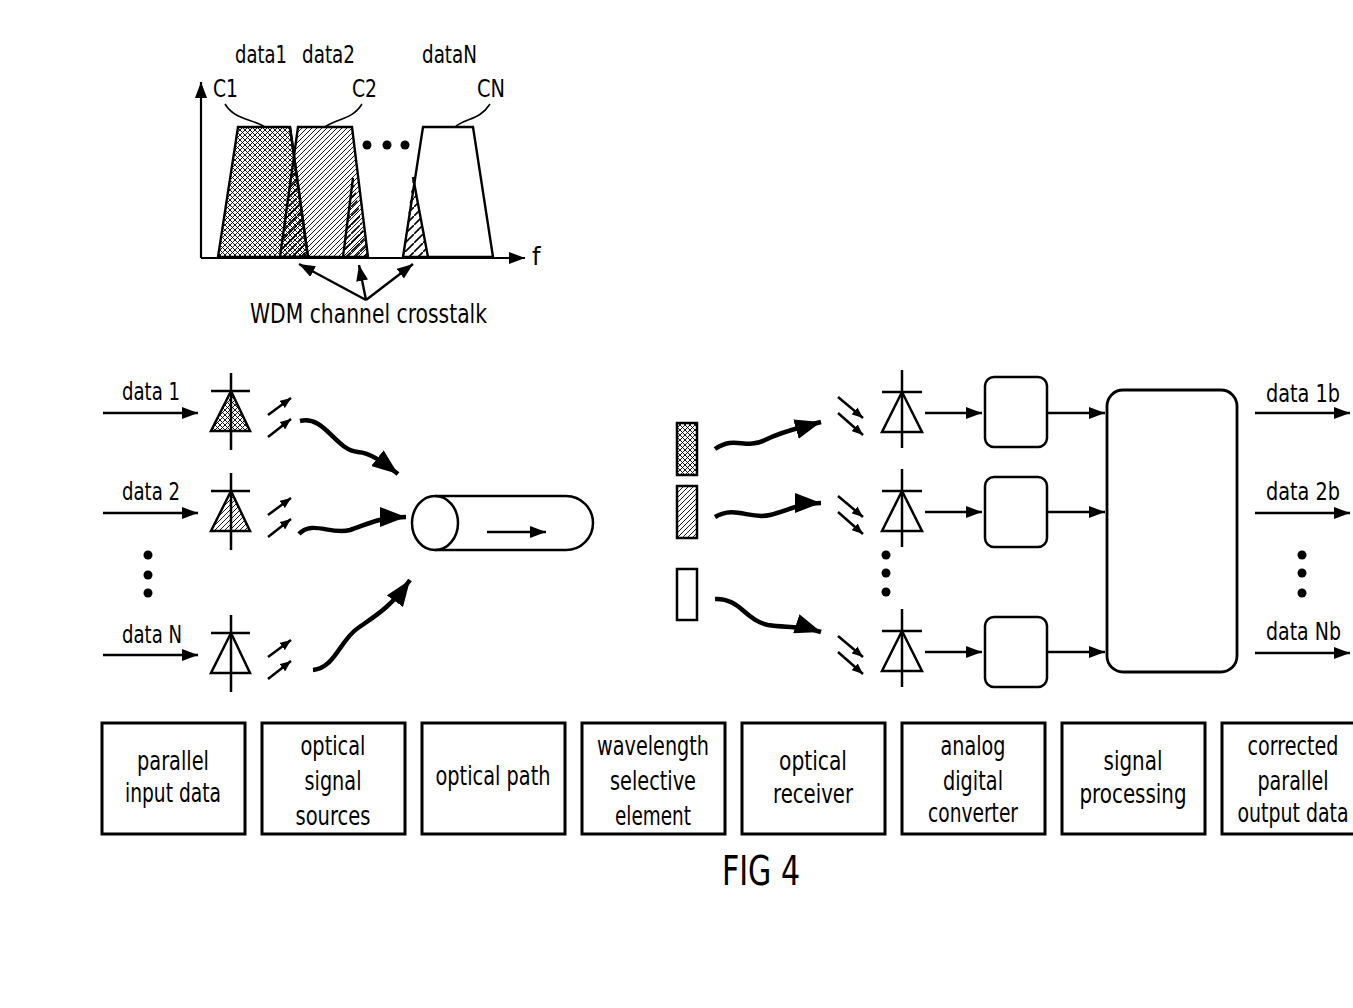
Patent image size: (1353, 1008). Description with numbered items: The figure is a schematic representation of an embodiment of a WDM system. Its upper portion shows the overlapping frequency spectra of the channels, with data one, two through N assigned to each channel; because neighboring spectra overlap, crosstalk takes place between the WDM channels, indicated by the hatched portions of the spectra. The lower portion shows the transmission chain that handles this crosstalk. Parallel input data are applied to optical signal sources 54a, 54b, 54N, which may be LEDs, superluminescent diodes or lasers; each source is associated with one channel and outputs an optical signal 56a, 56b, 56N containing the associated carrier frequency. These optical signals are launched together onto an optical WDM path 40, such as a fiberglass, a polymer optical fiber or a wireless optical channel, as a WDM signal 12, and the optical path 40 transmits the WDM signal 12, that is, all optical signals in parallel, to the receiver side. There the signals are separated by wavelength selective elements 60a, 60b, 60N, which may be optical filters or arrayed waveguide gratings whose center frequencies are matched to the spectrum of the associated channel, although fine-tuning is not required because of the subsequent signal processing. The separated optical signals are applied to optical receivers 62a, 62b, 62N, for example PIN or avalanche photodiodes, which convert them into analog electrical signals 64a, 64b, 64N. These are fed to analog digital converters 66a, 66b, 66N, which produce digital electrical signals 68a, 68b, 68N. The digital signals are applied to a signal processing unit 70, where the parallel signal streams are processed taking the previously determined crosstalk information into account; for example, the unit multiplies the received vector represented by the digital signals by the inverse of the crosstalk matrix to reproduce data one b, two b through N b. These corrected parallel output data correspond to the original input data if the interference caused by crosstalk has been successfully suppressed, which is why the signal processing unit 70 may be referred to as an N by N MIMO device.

The WDM signal 12 is at (516, 516).
The optical WDM path 40 is at (502, 485).
The optical signal source 54a is at (243, 413).
The optical signal source 54b is at (243, 513).
The optical signal source 54N is at (243, 655).
The optical signal 56a is at (363, 448).
The optical signal 56b is at (314, 528).
The optical signal 56N is at (350, 646).
The wavelength selective element 60a is at (686, 423).
The wavelength selective element 60b is at (677, 513).
The wavelength selective element 60N is at (686, 620).
The optical receiver 62a is at (890, 411).
The optical receiver 62b is at (890, 510).
The optical receiver 62N is at (890, 648).
The electrical signal 64a is at (955, 413).
The electrical signal 64b is at (955, 512).
The electrical signal 64N is at (953, 652).
The analog digital converter 66a is at (1015, 377).
The analog digital converter 66b is at (985, 525).
The analog digital converter 66N is at (1050, 668).
The digital electrical signal 68a is at (1070, 413).
The digital electrical signal 68b is at (1070, 512).
The digital electrical signal 68N is at (1070, 652).
The signal processing unit 70 is at (1167, 390).